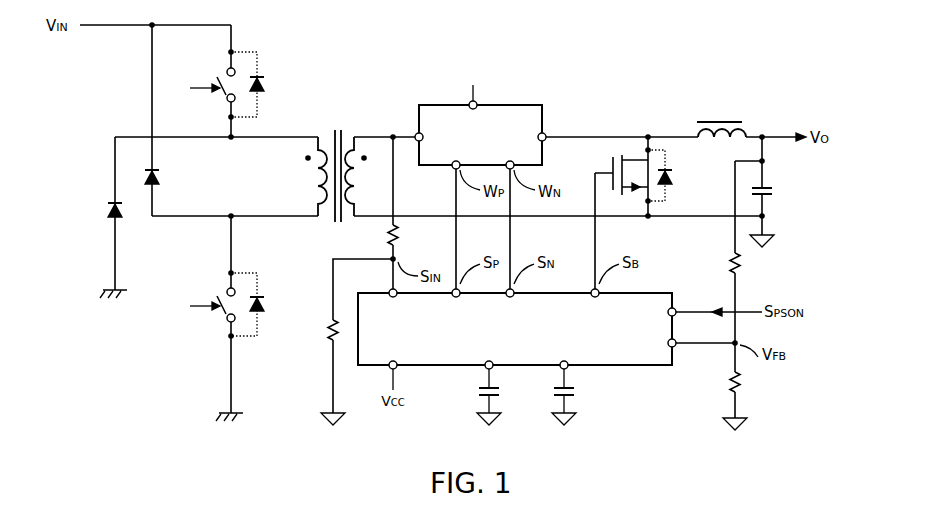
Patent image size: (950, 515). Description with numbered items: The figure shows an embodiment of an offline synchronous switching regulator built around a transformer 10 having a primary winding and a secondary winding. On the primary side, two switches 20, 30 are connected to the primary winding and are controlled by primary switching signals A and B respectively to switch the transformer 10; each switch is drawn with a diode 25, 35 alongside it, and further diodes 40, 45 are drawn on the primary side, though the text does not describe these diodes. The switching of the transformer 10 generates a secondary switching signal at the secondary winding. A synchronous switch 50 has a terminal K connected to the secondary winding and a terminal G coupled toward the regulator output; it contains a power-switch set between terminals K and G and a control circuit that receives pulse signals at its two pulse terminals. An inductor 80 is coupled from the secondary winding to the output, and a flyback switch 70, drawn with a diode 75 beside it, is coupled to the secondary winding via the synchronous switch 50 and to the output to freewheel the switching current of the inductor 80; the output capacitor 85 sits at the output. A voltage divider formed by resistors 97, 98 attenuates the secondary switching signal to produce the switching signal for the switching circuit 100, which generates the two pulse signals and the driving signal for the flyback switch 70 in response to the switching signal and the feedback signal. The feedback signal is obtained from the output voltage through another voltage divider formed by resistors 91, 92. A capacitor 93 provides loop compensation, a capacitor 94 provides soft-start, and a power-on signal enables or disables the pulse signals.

The transformer 10 is at (338, 128).
The switch 20 is at (221, 100).
The diode 25 is at (263, 92).
The switch 30 is at (221, 320).
The diode 35 is at (262, 315).
The diode 40 is at (160, 178).
The diode 45 is at (106, 210).
The synchronous switch 50 is at (532, 104).
The flyback switch 70 is at (604, 163).
The diode 75 is at (675, 174).
The inductor 80 is at (719, 118).
The output capacitor 85 is at (776, 193).
The resistor 91 is at (742, 263).
The resistor 92 is at (742, 382).
The capacitor 93 is at (578, 392).
The capacitor 94 is at (476, 391).
The resistor 97 is at (404, 236).
The resistor 98 is at (326, 326).
The switching circuit 100 is at (648, 368).